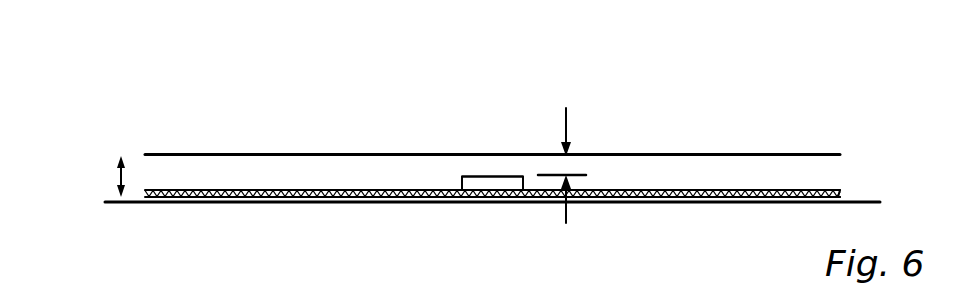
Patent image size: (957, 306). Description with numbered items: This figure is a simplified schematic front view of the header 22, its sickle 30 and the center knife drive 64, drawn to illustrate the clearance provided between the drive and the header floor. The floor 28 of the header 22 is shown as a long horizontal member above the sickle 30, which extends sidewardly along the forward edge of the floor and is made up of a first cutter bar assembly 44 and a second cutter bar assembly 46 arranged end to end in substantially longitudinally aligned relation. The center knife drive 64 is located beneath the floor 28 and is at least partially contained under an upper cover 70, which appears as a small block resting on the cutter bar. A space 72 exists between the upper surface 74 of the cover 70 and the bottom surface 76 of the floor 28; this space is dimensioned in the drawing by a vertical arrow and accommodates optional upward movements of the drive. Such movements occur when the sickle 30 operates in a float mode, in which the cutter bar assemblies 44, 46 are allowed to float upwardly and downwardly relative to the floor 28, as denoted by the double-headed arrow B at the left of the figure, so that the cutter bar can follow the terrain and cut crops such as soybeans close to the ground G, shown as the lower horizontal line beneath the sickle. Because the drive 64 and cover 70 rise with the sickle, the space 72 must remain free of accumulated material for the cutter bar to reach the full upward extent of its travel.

The header 22 is at (518, 138).
The floor 28 is at (810, 153).
The sickle 30 is at (838, 190).
The first cutter bar assembly 44 is at (172, 197).
The second cutter bar assembly 46 is at (769, 198).
The center knife drive 64 is at (462, 176).
The upper cover 70 is at (513, 103).
The upper surface of cover 74 is at (497, 176).
The space 72 is at (572, 117).
The bottom surface of floor 76 is at (652, 158).
The arrow B is at (117, 177).
The ground G is at (862, 201).